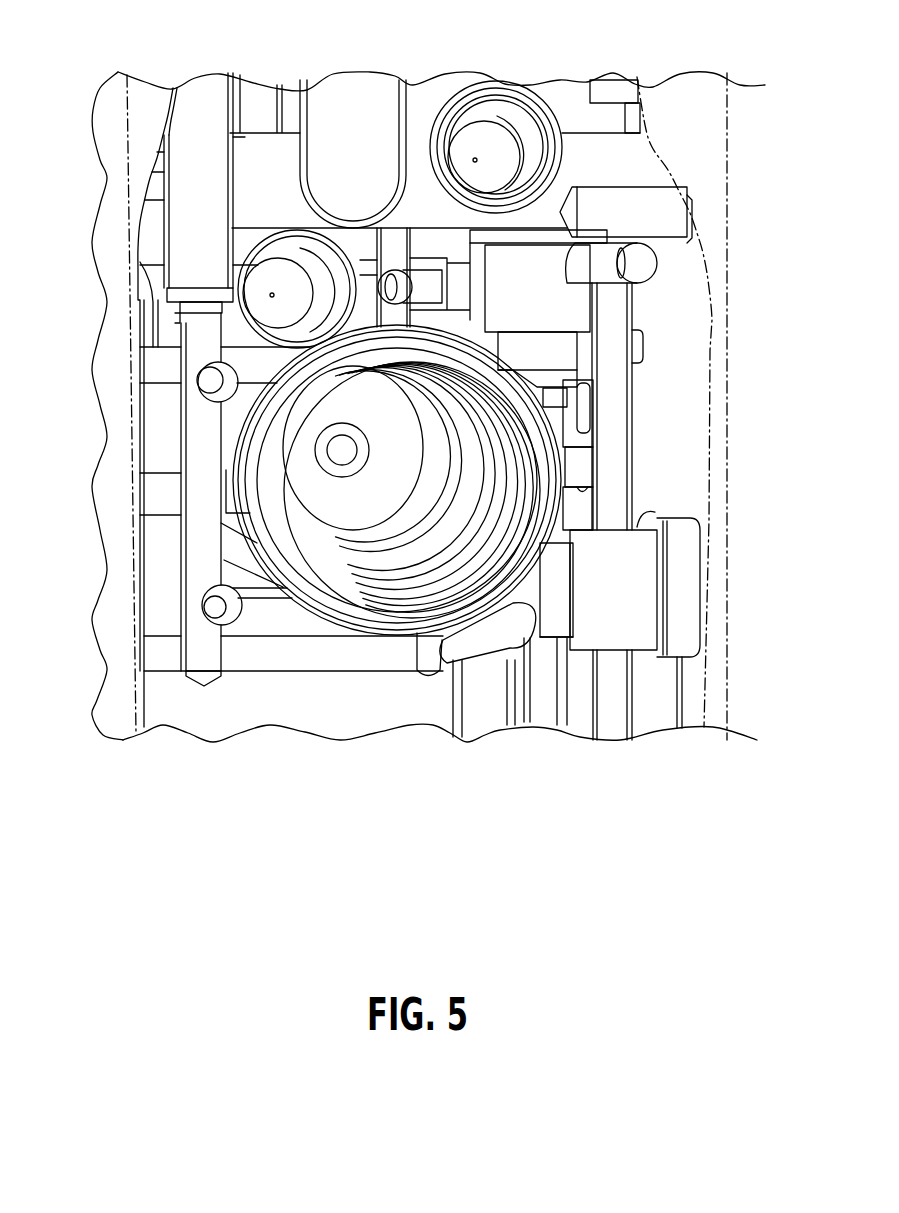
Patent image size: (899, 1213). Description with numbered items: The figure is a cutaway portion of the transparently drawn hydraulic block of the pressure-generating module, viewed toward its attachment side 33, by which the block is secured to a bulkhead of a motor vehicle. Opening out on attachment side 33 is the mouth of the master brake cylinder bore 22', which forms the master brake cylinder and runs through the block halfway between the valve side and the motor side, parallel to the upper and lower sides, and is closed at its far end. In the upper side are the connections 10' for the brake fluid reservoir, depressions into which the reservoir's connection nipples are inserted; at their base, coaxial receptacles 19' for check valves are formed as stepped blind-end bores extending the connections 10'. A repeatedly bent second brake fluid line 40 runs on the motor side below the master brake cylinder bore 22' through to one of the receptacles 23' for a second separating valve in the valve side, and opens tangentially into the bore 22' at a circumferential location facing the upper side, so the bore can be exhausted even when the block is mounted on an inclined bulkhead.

The connections for brake fluid reservoir 10' is at (628, 374).
The receptacles for check valves 19' is at (644, 326).
The attachment side 33 is at (685, 462).
The receptacle for second separating valve 23' is at (671, 584).
The second brake fluid line 40 is at (167, 365).
The master brake cylinder bore 22' is at (397, 561).